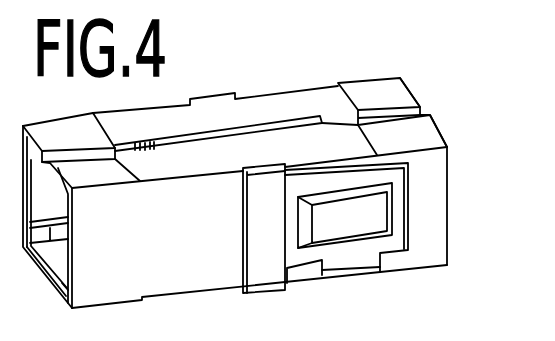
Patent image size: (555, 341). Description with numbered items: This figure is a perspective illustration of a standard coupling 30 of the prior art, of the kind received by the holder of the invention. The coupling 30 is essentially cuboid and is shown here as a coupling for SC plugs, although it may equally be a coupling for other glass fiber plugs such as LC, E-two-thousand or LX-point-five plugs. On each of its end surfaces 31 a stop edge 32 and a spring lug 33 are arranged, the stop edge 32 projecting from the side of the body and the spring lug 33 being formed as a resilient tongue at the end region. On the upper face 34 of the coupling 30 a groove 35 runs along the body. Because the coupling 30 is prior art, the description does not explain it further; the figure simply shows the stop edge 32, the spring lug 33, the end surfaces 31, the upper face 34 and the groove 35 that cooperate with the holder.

The coupling 30 is at (271, 197).
The end surfaces 31 is at (195, 253).
The stop edge 32 is at (268, 267).
The spring lug 33 is at (364, 223).
The upper face 34 is at (297, 106).
The groove 35 is at (397, 117).